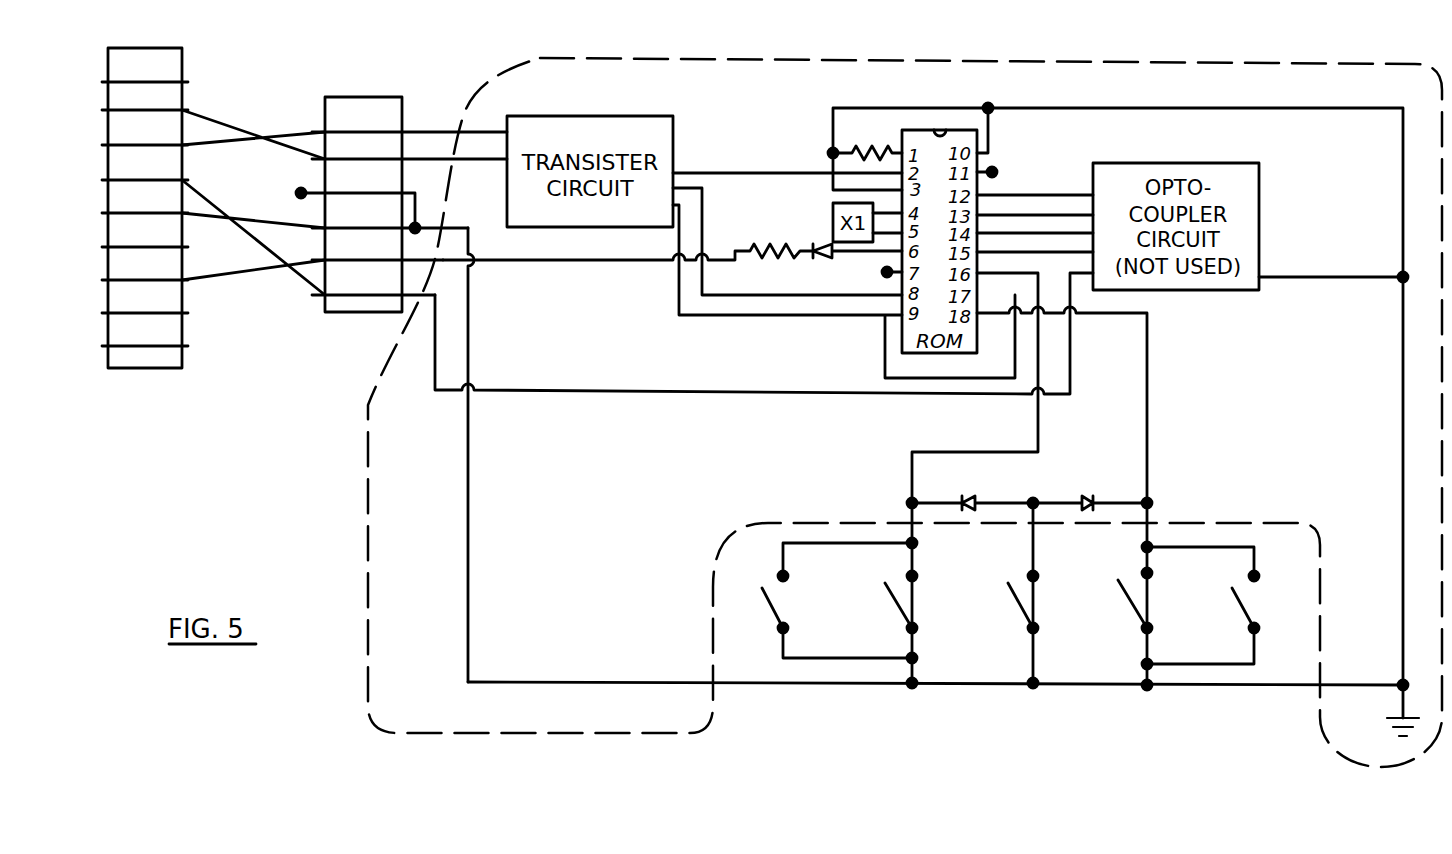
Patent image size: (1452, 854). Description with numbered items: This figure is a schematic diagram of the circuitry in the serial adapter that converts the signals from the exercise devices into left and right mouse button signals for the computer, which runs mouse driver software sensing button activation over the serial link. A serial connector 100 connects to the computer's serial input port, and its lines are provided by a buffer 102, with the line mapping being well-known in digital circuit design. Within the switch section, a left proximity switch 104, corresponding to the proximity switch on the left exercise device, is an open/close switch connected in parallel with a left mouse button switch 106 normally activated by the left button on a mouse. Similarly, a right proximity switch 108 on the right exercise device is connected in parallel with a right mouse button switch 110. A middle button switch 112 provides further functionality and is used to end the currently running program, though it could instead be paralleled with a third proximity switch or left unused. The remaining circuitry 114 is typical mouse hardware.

The serial connector 100 is at (168, 368).
The buffer 102 is at (335, 97).
The left proximity switch 104 is at (770, 613).
The left mouse button switch 106 is at (920, 623).
The right proximity switch 108 is at (1273, 600).
The right mouse button switch 110 is at (1140, 615).
The middle button switch 112 is at (1018, 608).
The remaining circuitry 114 is at (576, 736).